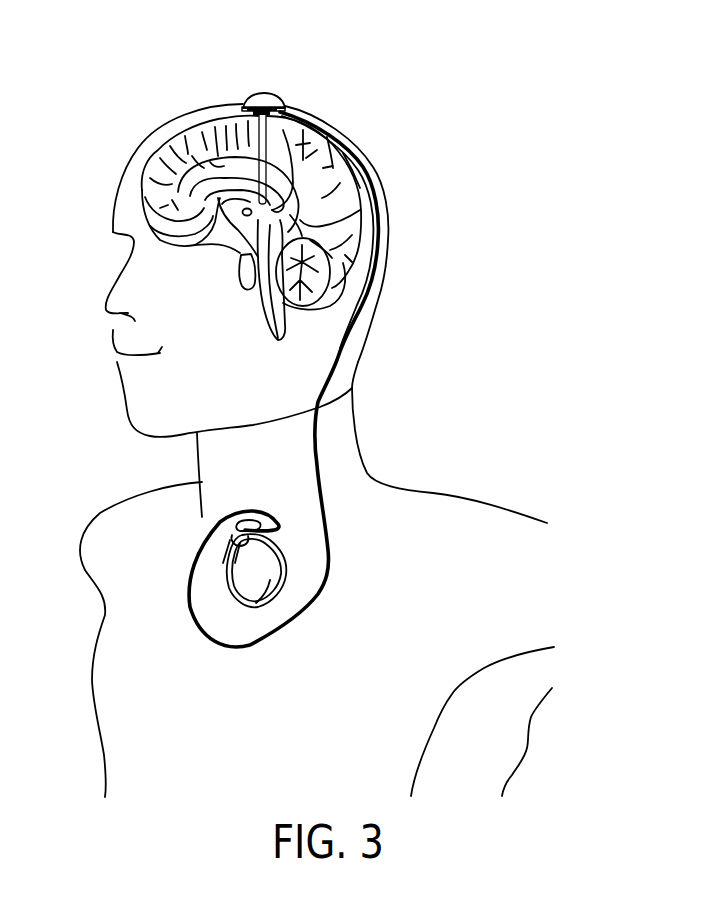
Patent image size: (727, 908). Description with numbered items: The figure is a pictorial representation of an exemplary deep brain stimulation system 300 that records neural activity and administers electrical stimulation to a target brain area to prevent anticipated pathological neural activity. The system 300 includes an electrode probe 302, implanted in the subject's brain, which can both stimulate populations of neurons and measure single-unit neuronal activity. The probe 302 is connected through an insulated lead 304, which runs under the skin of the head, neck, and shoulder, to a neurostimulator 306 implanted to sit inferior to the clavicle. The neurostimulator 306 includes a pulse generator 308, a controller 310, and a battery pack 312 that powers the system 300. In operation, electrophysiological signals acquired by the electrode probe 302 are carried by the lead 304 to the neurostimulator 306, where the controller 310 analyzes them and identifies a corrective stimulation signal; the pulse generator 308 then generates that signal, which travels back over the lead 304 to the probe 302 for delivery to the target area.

The deep brain stimulation system 300 is at (515, 190).
The electrode probe 302 is at (270, 92).
The insulated lead 304 is at (315, 432).
The neurostimulator 306 is at (303, 558).
The pulse generator 308 is at (240, 527).
The controller 310 is at (227, 555).
The battery pack 312 is at (273, 592).